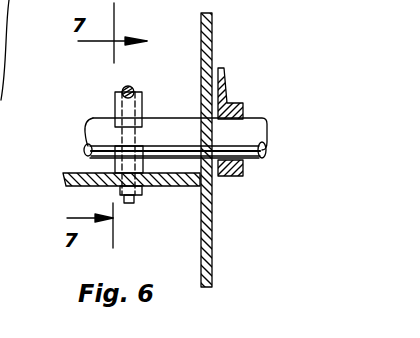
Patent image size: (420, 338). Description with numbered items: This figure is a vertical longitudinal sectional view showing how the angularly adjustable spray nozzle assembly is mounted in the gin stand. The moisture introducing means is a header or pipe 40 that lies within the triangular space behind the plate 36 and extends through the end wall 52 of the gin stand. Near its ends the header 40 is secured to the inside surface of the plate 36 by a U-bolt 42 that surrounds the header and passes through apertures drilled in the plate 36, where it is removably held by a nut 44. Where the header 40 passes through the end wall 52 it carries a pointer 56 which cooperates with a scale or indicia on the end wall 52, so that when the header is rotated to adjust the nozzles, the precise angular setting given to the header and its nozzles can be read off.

The plate 36 is at (78, 185).
The header 40 is at (102, 126).
The U-bolt 42 is at (132, 89).
The nut 44 is at (136, 194).
The end wall 52 is at (212, 205).
The pointer 56 is at (230, 105).